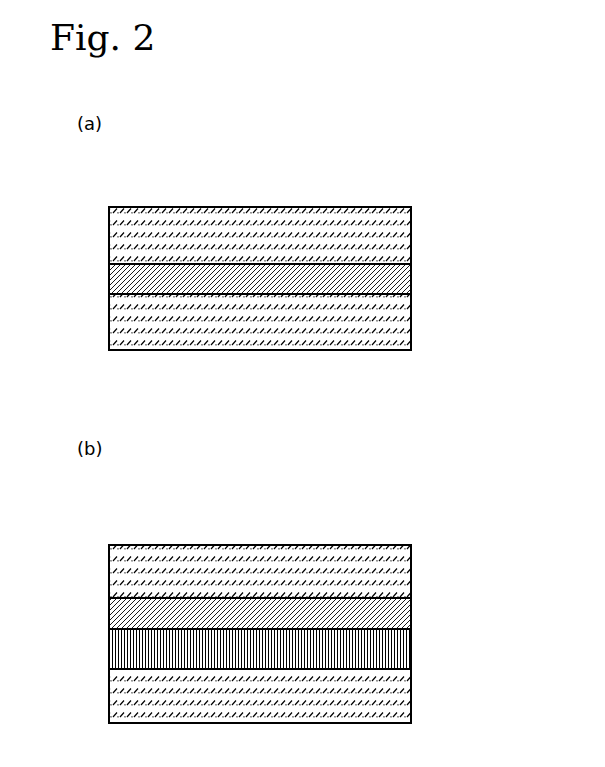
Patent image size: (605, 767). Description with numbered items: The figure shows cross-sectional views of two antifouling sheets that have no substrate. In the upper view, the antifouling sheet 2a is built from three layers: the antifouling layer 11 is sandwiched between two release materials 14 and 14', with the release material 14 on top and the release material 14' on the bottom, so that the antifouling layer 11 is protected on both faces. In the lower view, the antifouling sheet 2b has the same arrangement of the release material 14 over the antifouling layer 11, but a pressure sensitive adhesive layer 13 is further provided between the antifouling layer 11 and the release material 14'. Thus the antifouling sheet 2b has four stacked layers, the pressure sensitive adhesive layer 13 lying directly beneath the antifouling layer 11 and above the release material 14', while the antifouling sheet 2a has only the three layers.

The antifouling sheet 2a is at (396, 169).
The antifouling sheet 2b is at (397, 495).
The release material 14 is at (326, 402).
The antifouling layer 11 is at (393, 283).
The pressure sensitive adhesive layer 13 is at (398, 654).
The release material 14' is at (330, 508).